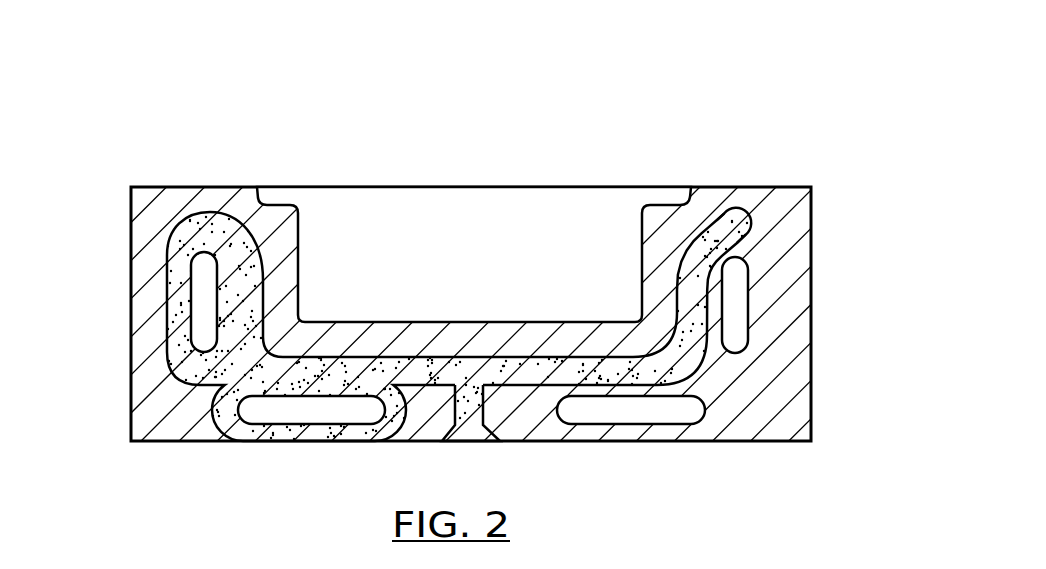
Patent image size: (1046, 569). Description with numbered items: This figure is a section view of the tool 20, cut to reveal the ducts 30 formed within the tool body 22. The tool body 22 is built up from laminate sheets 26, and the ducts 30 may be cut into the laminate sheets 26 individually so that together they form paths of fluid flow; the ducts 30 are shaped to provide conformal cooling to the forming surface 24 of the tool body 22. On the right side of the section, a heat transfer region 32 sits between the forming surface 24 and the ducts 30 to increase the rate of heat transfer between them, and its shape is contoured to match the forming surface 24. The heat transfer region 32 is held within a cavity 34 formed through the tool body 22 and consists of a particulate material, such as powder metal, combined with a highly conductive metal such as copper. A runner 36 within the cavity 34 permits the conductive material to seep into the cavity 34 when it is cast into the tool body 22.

The tool 20 is at (521, 281).
The tool body 22 is at (812, 365).
The forming surface 24 is at (460, 322).
The laminate sheets 26 is at (812, 326).
The ducts 30 is at (197, 303).
The heat transfer region 32 is at (737, 210).
The cavity 34 is at (748, 229).
The runner 36 is at (483, 409).